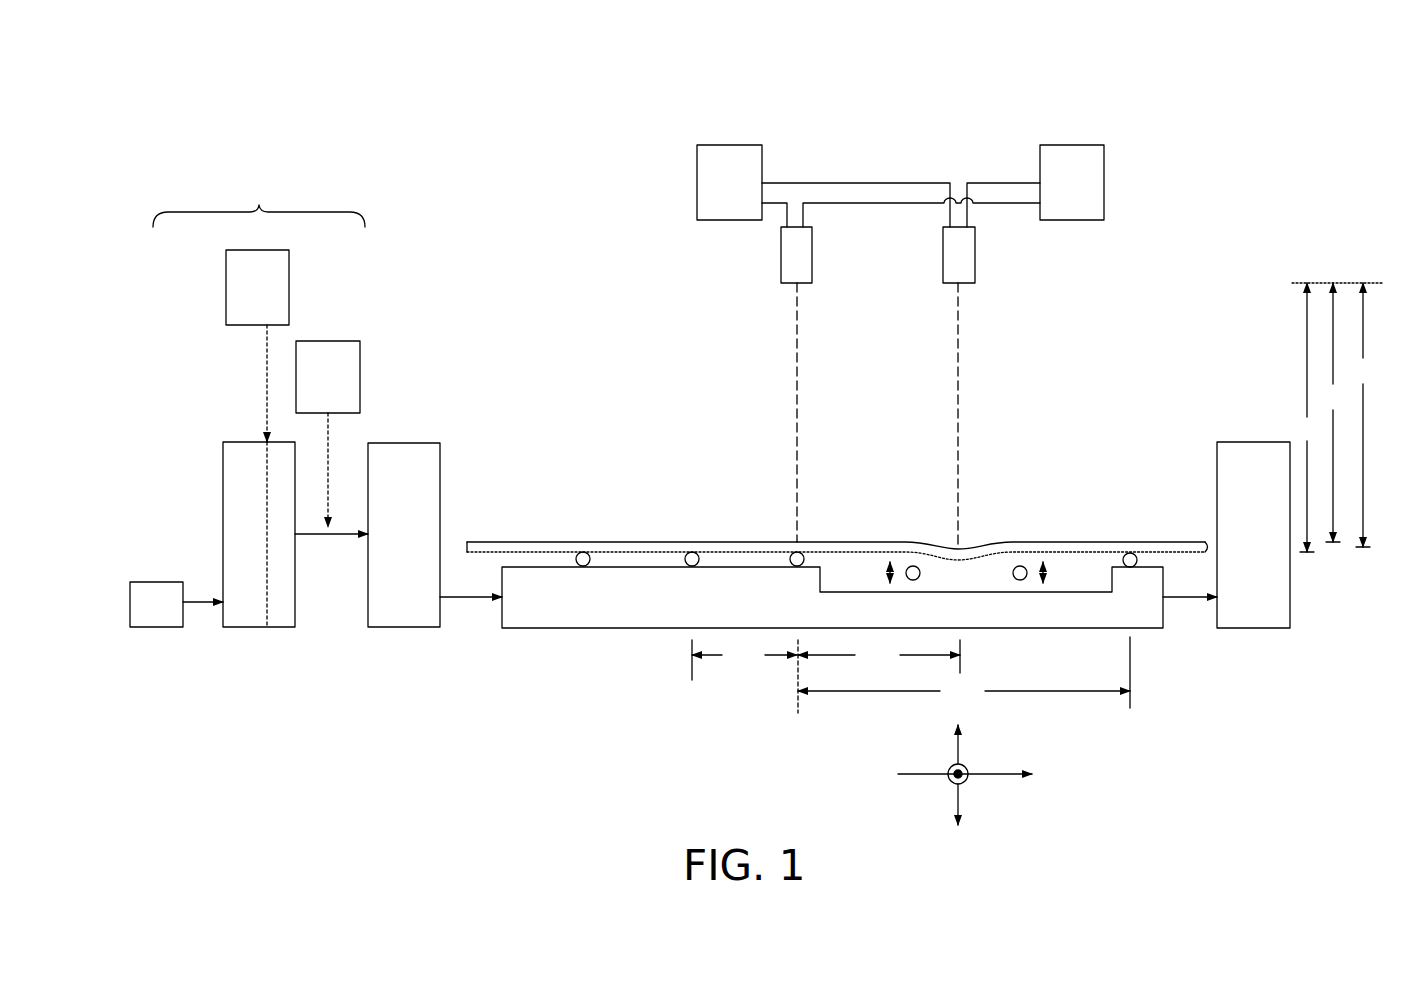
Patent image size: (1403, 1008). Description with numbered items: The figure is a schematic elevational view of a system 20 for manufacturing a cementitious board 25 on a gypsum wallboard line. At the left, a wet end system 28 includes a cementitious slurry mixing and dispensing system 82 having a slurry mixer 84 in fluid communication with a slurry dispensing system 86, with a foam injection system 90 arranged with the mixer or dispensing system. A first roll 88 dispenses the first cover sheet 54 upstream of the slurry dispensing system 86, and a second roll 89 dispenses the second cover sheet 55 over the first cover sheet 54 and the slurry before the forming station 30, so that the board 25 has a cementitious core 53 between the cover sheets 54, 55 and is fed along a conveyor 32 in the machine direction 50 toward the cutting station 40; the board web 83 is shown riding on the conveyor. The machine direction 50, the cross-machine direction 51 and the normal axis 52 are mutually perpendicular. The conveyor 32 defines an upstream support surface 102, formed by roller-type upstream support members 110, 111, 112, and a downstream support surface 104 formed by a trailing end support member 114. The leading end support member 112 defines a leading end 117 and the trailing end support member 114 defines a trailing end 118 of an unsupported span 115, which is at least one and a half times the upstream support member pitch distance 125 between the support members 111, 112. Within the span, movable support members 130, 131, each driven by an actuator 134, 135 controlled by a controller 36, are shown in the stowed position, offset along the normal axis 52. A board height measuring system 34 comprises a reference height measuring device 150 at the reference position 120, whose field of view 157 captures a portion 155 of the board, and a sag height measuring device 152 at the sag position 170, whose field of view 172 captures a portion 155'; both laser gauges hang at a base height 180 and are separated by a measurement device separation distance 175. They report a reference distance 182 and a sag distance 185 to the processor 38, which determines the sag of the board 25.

The system 20 is at (358, 160).
The wet end system 28 is at (259, 205).
The foam injection system 90 is at (247, 290).
The second roll 89 is at (337, 341).
The cementitious slurry mixing and dispensing system 82 is at (227, 432).
The slurry mixer 84 is at (237, 492).
The first roll 88 is at (155, 582).
The slurry dispensing system 86 is at (280, 613).
The forming station 30 is at (405, 442).
The glass web 83 is at (528, 540).
The cementitious board 25 is at (607, 542).
The second cover sheet 55 is at (637, 547).
The cementitious core 53 is at (667, 540).
The upstream support surface 102 is at (797, 552).
The upstream support member 110 is at (580, 570).
The upstream support member 111 is at (688, 568).
The leading end support member 112 is at (795, 555).
The conveyor 32 is at (595, 585).
The first cover sheet 54 is at (625, 553).
The downstream support surface 104 is at (1145, 567).
The leading end 117 is at (785, 540).
The controller 36 is at (697, 183).
The processor 38 is at (1104, 183).
The reference height measuring device 150 is at (782, 257).
The sag height measuring device 152 is at (975, 255).
The board height measuring system 34 is at (773, 272).
The portion 155 is at (764, 418).
The field of view 157 is at (797, 397).
The reference position 120 is at (797, 538).
The portion 155' is at (901, 463).
The sag position 170 is at (958, 543).
The field of view 172 is at (962, 490).
The movable support member 130 is at (913, 566).
The actuator 134 is at (898, 580).
The movable support member 131 is at (1017, 566).
The actuator 135 is at (1025, 580).
The trailing end 118 is at (1133, 553).
The trailing end support member 114 is at (1125, 557).
The cutting station 40 is at (1217, 483).
The upstream support member pitch distance 125 is at (745, 676).
The measurement device separation distance 175 is at (879, 656).
The unsupported span 115 is at (964, 672).
The base height 180 is at (1335, 417).
The reference distance 182 is at (1333, 412).
The sag distance 185 is at (1362, 415).
The machine direction 50 is at (985, 778).
The cross-machine direction 51 is at (953, 785).
The normal axis 52 is at (957, 755).